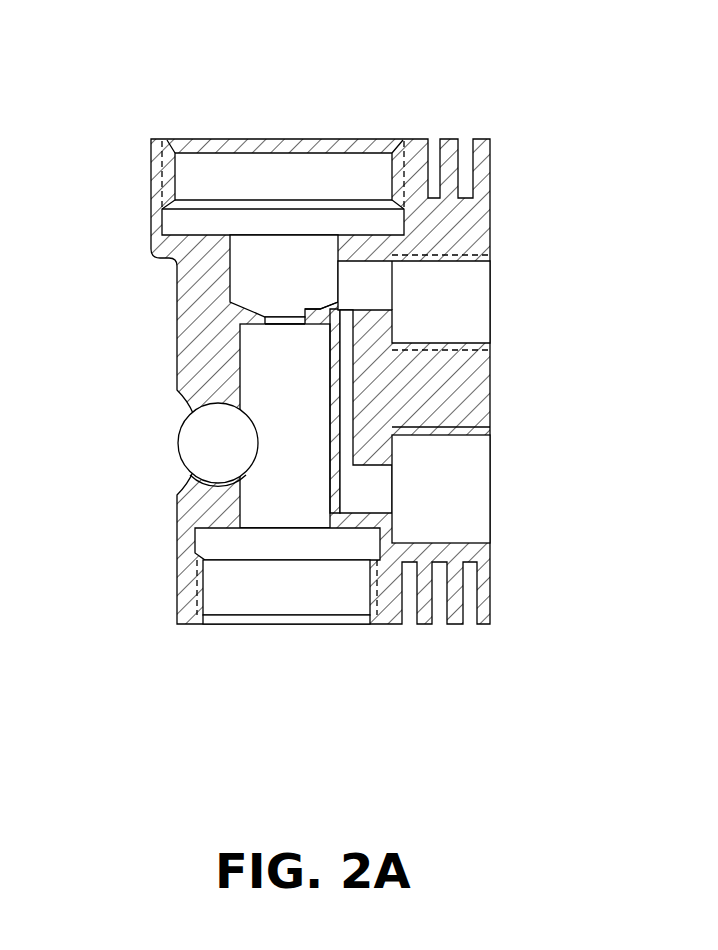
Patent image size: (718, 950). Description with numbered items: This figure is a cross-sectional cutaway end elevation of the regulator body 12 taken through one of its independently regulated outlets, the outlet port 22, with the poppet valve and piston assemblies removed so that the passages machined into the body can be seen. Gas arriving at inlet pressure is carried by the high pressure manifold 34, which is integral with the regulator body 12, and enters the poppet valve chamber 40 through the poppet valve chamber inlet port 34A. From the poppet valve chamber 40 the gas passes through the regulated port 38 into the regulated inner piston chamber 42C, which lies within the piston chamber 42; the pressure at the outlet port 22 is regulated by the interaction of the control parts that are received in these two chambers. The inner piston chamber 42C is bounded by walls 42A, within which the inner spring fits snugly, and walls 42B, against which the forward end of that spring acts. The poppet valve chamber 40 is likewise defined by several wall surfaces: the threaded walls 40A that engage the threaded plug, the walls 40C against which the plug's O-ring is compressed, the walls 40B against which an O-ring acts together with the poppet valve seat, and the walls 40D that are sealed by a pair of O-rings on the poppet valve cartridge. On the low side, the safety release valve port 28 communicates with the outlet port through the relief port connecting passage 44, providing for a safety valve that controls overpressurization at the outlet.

The regulator body 12 is at (545, 220).
The outlet port 22 is at (447, 313).
The safety release valve port 28 is at (457, 490).
The high pressure manifold 34 is at (187, 443).
The poppet valve chamber inlet port 34A is at (245, 478).
The regulated port 38 is at (280, 310).
The poppet valve chamber 40 is at (320, 357).
The threaded walls of poppet valve cartridge chamber 40A is at (328, 592).
The poppet valve cartridge chamber walls 40B is at (305, 325).
The walls of poppet valve cartridge chamber 40C is at (222, 478).
The walls of poppet valve cartridge chamber 40D is at (240, 368).
The piston chamber 42 is at (190, 182).
The walls of inner piston chamber 42A is at (230, 273).
The walls of inner piston chamber 42B is at (320, 303).
The inner piston chamber 42C is at (278, 270).
The relief port connecting passage 44 is at (345, 388).